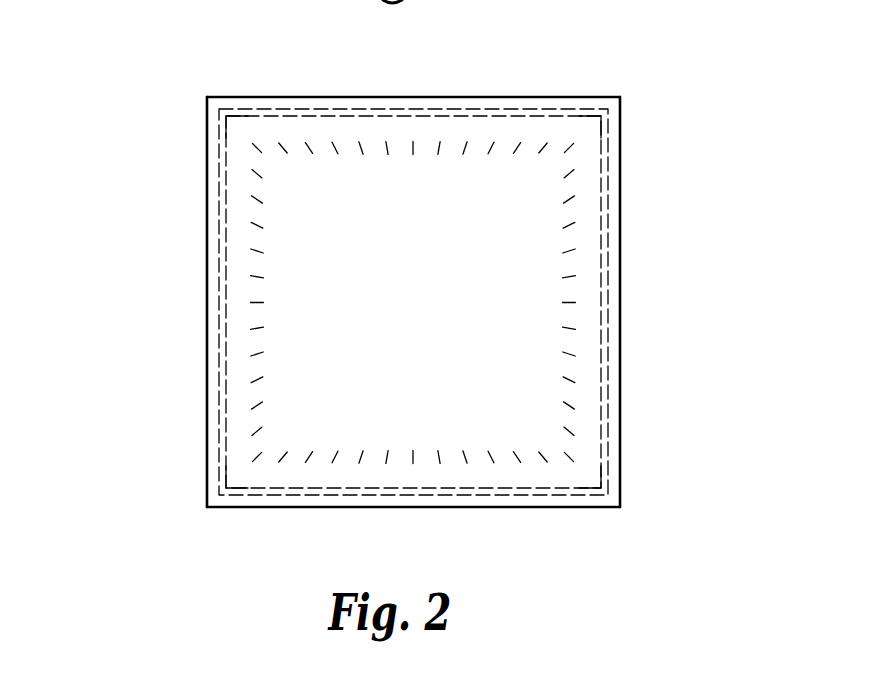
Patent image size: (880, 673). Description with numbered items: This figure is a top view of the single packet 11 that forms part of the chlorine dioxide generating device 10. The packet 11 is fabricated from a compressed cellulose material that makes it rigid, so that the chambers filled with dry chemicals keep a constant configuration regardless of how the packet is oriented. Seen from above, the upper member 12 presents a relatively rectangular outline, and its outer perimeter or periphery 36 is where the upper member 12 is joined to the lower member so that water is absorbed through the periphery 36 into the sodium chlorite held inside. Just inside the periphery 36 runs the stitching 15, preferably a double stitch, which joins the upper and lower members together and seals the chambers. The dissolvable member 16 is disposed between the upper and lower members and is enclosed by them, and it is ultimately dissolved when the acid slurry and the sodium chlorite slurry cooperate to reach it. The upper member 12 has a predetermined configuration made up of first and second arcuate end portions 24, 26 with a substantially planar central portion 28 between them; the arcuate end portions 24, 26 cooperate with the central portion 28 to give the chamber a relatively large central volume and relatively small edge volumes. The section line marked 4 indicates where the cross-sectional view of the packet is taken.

The section line 4- 4 is at (72, 301).
The device 10 is at (464, 110).
The single packet 11 is at (292, 97).
The upper member 12 is at (557, 130).
The stitching 15 is at (608, 185).
The dissolvable member 16 is at (228, 136).
The first arcuate end portion 24 is at (243, 368).
The second arcuate end portion 26 is at (586, 372).
The central portion 28 is at (425, 298).
The periphery 36 is at (254, 508).